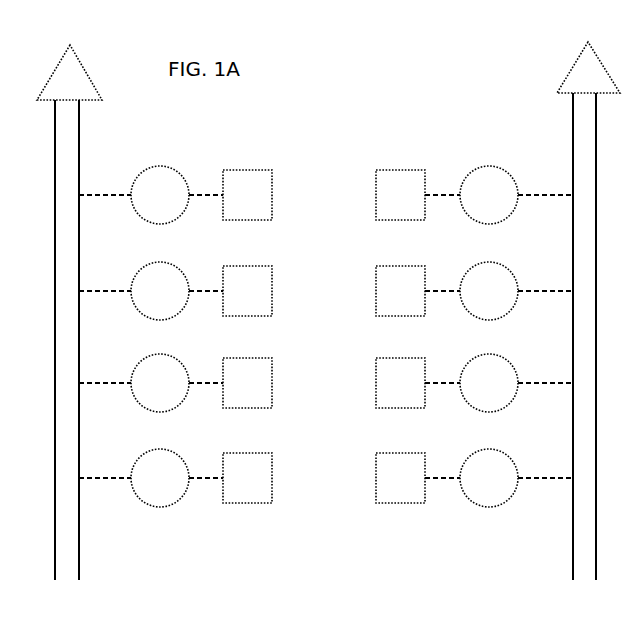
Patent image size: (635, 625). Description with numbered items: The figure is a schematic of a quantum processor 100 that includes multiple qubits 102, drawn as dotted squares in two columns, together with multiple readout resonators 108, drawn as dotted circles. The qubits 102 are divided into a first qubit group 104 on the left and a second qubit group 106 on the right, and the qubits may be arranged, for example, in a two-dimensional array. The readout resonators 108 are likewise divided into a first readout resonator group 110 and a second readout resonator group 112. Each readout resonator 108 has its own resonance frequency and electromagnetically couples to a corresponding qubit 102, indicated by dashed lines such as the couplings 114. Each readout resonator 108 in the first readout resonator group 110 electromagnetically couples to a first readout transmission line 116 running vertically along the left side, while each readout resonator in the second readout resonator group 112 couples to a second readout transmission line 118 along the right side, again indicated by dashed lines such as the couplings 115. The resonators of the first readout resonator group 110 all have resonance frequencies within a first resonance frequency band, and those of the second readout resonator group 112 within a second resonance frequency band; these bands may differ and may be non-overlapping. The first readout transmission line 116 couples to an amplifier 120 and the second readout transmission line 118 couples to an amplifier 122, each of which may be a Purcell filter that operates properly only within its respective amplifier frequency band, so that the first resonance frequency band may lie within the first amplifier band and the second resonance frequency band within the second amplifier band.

The quantum processor 100 is at (340, 82).
The qubit 102 is at (261, 198).
The first qubit group 104 is at (247, 153).
The second qubit group 106 is at (402, 155).
The readout resonator 108 is at (172, 178).
The first readout resonator group 110 is at (166, 152).
The second readout resonator group 112 is at (490, 147).
The coupling 114 is at (440, 199).
The coupling 115 is at (103, 199).
The first readout transmission line 116 is at (76, 158).
The second readout transmission line 118 is at (583, 158).
The amplifier 120 is at (88, 89).
The amplifier 122 is at (557, 92).